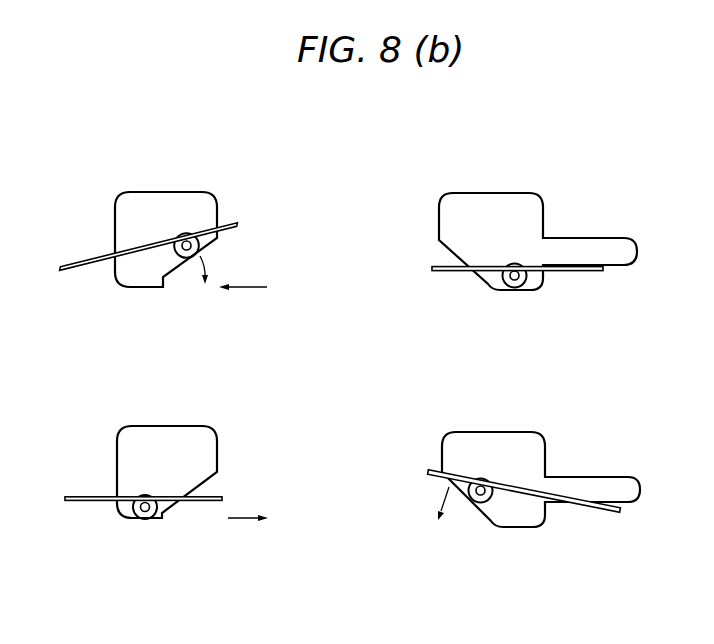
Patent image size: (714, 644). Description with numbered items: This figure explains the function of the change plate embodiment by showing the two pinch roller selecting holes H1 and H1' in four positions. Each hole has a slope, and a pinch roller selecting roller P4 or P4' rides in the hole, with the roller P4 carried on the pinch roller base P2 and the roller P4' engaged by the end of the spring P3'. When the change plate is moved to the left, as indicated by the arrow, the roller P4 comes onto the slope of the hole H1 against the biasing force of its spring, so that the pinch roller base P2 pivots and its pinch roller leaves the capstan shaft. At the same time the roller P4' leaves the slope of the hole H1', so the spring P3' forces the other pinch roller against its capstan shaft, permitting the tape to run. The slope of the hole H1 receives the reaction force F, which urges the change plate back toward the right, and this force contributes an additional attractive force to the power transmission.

The pinch roller selecting hole H1 is at (194, 337).
The pinch roller base P2 is at (83, 269).
The pinch roller selecting roller P4 is at (213, 408).
The pinch roller selecting hole H1' is at (539, 343).
The pinch roller selecting roller P4' is at (493, 434).
The spring P3' is at (524, 424).
The reaction force F is at (324, 385).